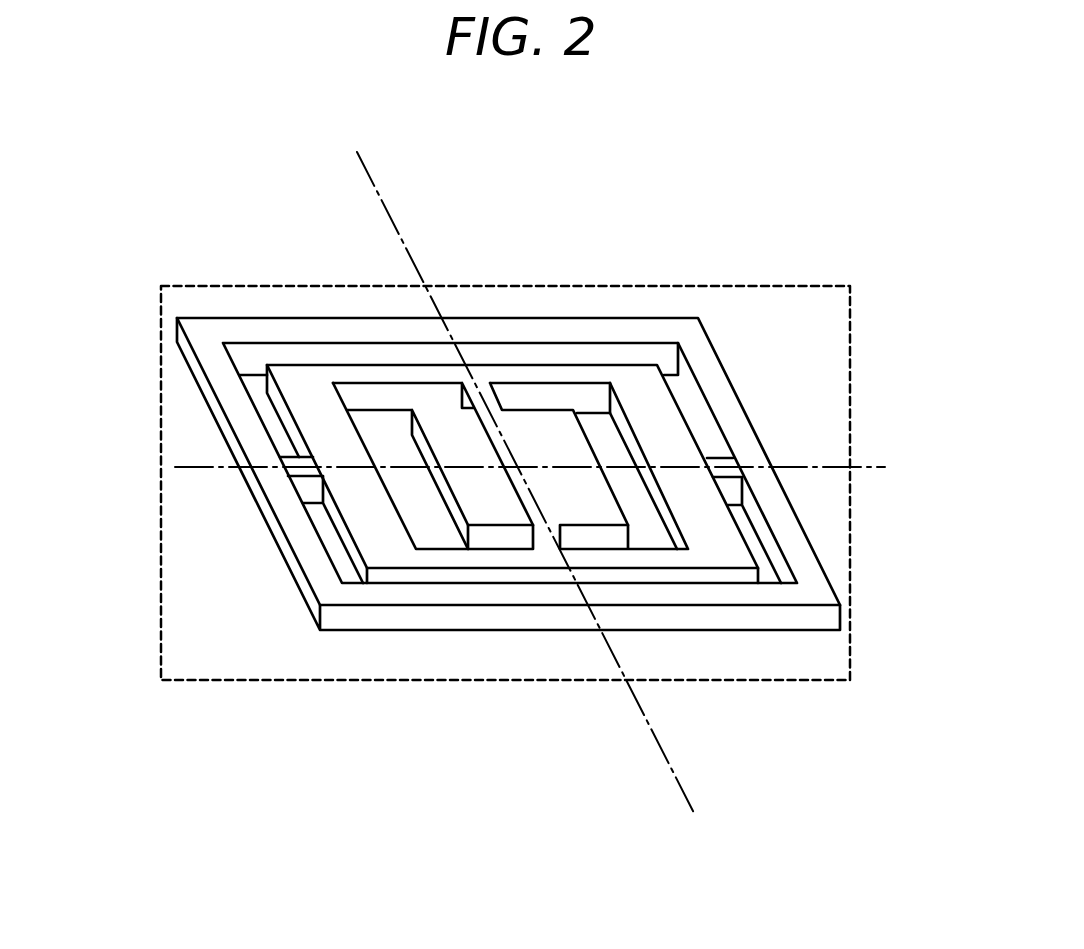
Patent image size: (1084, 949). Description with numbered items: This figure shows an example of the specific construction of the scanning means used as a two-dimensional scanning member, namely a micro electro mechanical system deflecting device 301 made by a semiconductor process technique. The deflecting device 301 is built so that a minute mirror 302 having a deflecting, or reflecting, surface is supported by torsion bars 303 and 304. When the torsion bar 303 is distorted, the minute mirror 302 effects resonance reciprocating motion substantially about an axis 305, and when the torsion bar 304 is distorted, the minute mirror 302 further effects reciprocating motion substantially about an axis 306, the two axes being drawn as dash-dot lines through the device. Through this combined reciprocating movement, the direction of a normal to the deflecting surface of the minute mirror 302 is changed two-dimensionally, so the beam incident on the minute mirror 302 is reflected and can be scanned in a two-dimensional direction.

The deflecting device 301 is at (540, 285).
The minute mirror 302 is at (555, 452).
The torsion bar 303 is at (545, 533).
The torsion bar 304 is at (296, 458).
The axis 305 is at (622, 652).
The axis 306 is at (818, 472).